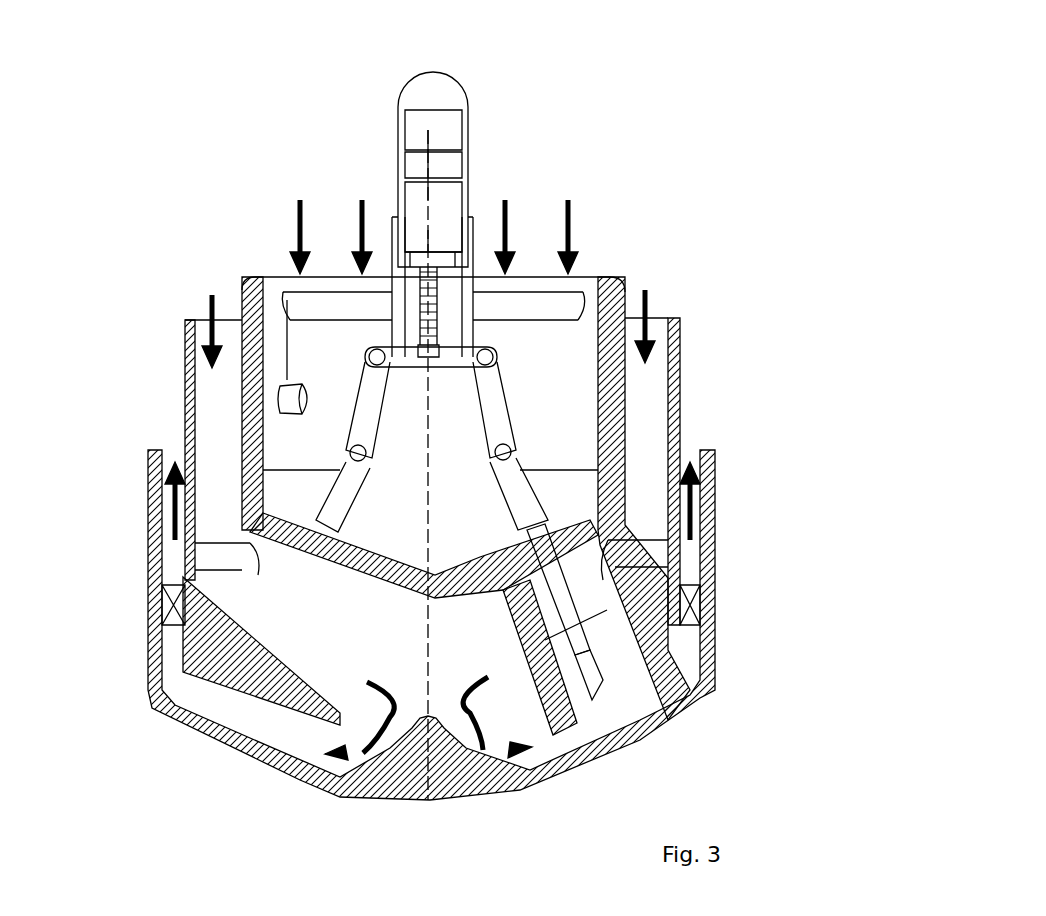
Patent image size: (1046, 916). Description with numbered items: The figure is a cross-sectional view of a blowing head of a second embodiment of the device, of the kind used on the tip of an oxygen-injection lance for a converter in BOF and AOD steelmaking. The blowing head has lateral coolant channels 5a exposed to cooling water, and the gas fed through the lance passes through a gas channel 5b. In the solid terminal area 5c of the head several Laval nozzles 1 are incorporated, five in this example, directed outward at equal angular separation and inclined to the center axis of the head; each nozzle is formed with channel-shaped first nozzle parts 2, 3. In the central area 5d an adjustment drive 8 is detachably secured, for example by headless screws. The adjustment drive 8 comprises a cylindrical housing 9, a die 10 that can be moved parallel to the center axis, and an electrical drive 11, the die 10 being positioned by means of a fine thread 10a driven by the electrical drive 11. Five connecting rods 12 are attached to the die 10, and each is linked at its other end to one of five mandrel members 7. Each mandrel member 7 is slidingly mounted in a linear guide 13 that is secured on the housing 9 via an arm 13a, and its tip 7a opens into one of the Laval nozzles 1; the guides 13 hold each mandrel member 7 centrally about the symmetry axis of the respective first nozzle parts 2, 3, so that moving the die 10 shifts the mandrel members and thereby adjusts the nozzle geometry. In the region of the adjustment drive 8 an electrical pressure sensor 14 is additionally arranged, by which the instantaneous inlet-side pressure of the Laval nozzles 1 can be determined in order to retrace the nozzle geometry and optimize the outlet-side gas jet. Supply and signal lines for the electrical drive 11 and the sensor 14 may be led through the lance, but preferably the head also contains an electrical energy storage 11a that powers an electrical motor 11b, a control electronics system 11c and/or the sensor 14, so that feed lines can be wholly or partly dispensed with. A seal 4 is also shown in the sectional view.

The Laval nozzle 1 is at (625, 768).
The first nozzle part 2 is at (578, 574).
The first nozzle part 3 is at (625, 697).
The seal 4 is at (700, 655).
The lateral coolant channel 5a is at (163, 462).
The gas channel 5b is at (272, 264).
The solid terminal area 5c is at (236, 740).
The central area 5d is at (233, 292).
The mandrel member 7 is at (530, 552).
The tip 7a is at (585, 652).
The adjustment drive 8 is at (325, 208).
The cylindrical housing 9 is at (246, 332).
The die 10 is at (440, 316).
The fine thread 10a is at (433, 335).
The electrical drive 11 is at (482, 136).
The electrical energy storage 11a is at (452, 114).
The electrical motor 11b is at (446, 204).
The control electronics system 11c is at (416, 162).
The connecting rod 12 is at (498, 386).
The linear guide 13 is at (490, 486).
The arm 13a is at (556, 488).
The electrical pressure sensor 14 is at (282, 405).